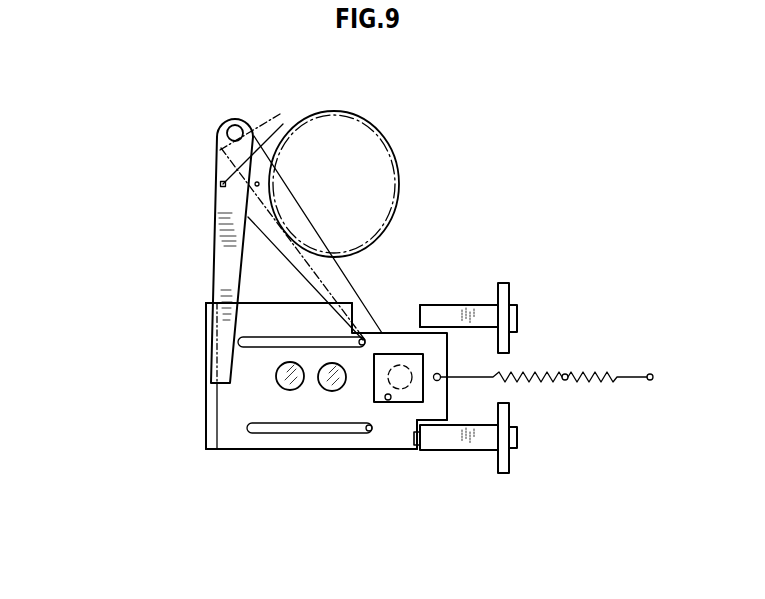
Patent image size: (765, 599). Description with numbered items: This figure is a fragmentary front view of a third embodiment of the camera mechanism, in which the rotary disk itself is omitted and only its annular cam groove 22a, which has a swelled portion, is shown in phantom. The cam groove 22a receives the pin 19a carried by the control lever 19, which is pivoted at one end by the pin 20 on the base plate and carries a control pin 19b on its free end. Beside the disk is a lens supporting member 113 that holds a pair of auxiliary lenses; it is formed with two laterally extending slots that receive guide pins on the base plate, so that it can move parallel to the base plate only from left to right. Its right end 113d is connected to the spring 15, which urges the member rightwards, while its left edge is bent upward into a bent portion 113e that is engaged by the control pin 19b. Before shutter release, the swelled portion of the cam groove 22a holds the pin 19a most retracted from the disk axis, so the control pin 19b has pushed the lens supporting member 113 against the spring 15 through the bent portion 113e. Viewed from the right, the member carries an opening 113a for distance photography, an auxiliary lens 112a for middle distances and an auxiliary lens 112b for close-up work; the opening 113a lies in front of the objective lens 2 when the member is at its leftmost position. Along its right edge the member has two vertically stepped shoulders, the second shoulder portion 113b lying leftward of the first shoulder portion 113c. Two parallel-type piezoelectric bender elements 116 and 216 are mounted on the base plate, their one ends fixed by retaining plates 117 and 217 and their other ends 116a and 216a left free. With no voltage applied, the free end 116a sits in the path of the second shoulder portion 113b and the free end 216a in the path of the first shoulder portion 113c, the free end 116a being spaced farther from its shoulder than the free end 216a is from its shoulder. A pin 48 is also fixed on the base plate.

The objective lens 2 is at (400, 365).
The spring 15 is at (575, 380).
The control lever 19 is at (215, 253).
The pin 19a is at (222, 183).
The control pin 19b is at (210, 394).
The pin 20 is at (232, 126).
The cam groove 22a is at (348, 115).
The pin 48 is at (565, 381).
The auxiliary lens 112a is at (332, 392).
The auxiliary lens 112b is at (290, 392).
The lens supporting member 113 is at (227, 442).
The opening 113a is at (388, 400).
The second shoulder portion 113b is at (353, 313).
The first shoulder portion 113c is at (422, 432).
The right end 113d is at (446, 385).
The bent portion 113e is at (209, 423).
The piezoelectric bender element 116 is at (465, 307).
The free end 116a is at (418, 312).
The retaining plate 117 is at (507, 287).
The piezoelectric bender element 216 is at (463, 443).
The free end 216a is at (413, 446).
The retaining plate 217 is at (507, 472).